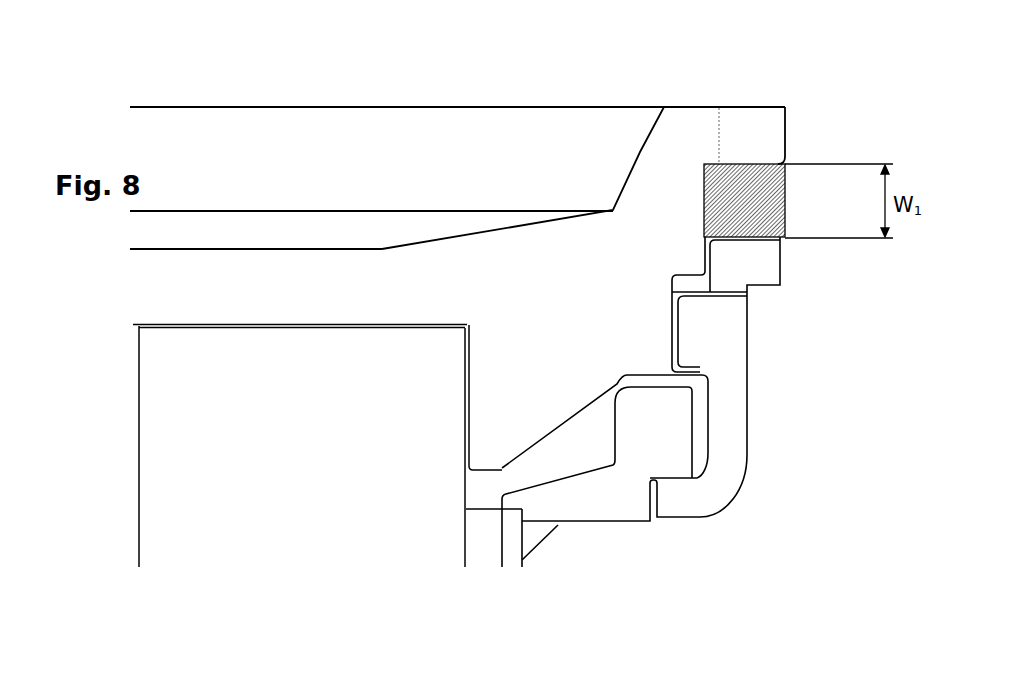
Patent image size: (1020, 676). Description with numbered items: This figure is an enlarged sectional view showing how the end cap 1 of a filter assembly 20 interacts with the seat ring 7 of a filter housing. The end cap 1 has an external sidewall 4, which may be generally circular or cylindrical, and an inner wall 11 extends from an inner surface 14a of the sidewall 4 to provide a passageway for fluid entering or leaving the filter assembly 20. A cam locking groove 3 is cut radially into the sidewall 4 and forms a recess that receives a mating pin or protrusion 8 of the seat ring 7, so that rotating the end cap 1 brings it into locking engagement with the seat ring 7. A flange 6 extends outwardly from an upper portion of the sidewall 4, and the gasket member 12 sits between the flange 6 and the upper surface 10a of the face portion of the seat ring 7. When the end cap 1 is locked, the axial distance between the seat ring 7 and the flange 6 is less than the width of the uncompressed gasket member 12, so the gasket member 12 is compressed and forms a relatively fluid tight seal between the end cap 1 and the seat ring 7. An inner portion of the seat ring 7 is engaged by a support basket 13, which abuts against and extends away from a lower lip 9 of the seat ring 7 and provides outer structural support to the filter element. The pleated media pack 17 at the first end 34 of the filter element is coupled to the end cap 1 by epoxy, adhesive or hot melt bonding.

The end cap 1 is at (453, 139).
The inner wall 11 is at (212, 249).
The first end 34 is at (268, 332).
The inner surface 14a is at (640, 152).
The filter assembly 20 is at (745, 45).
The flange 6 is at (743, 163).
The gasket member 12 is at (745, 213).
The upper surface 10a is at (750, 242).
The sidewall 4 is at (703, 379).
The cam locking groove 3 is at (705, 294).
The pin or protrusion 8 is at (687, 338).
The seat ring 7 is at (733, 411).
The support basket 13 is at (658, 448).
The lower lip 9 is at (672, 498).
The pleated media pack 17 is at (237, 469).